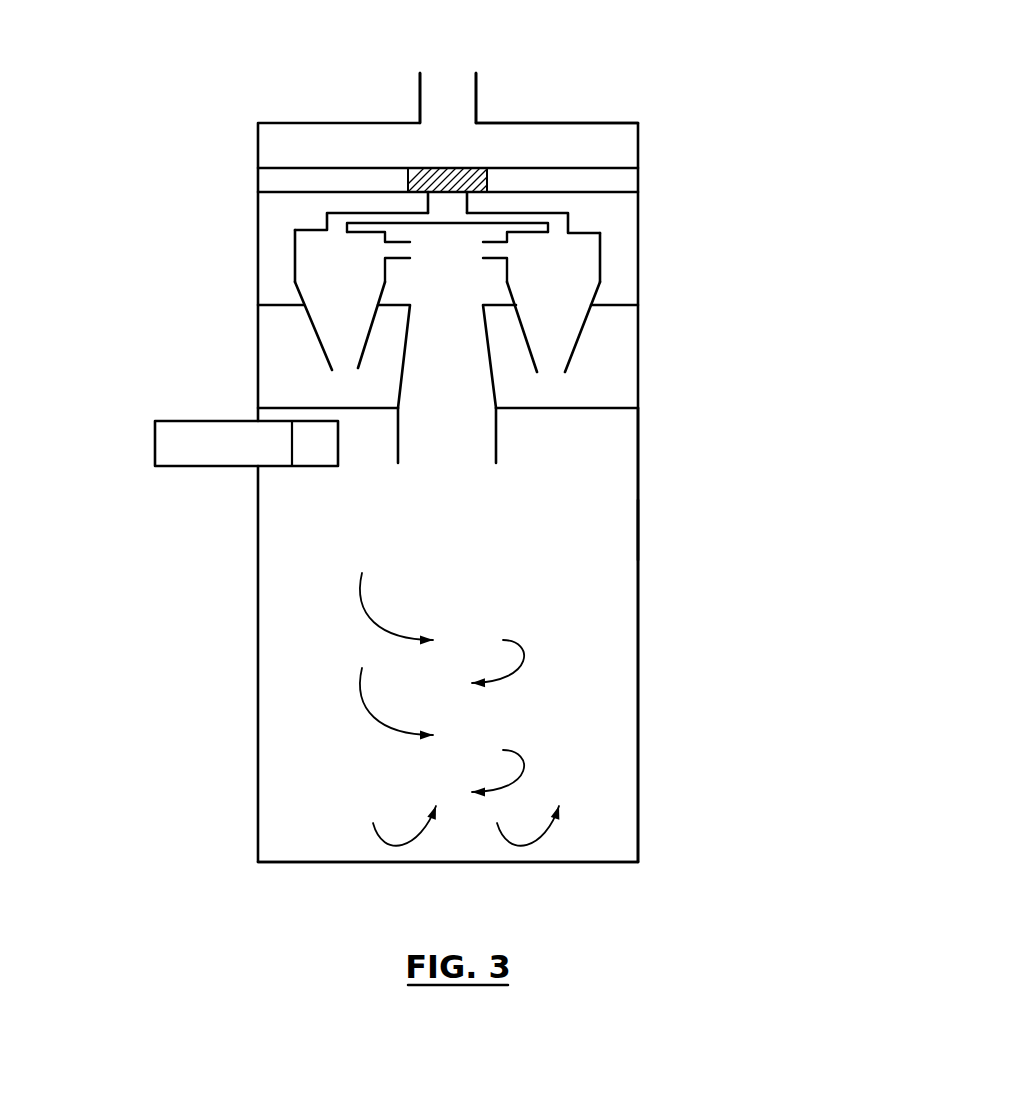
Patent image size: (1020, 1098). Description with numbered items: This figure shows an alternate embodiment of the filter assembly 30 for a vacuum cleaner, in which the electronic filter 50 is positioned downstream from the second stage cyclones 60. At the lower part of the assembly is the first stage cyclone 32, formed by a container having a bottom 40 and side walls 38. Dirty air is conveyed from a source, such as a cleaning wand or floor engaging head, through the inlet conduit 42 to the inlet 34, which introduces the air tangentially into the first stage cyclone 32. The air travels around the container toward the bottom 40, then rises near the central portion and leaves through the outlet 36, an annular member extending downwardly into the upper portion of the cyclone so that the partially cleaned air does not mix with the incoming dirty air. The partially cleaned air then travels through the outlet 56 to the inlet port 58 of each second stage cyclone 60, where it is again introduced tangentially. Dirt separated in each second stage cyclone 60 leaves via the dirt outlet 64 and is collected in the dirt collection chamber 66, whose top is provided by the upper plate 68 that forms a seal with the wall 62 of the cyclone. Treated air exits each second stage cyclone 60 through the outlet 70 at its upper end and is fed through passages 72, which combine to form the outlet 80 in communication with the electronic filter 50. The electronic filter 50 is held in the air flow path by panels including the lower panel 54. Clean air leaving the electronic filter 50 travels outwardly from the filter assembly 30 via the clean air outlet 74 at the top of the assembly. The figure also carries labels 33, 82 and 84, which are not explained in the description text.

The filter assembly 30 is at (700, 755).
The first stage cyclone 32 is at (613, 655).
The chamber wall 33 is at (638, 713).
The inlet 34 is at (300, 438).
The outlet 36 is at (473, 443).
The side walls 38 is at (638, 545).
The bottom 40 is at (593, 863).
The inlet conduit 42 is at (165, 441).
The electronic filter 50 is at (410, 188).
The lower panel 54 is at (615, 408).
The outlet 56 is at (435, 399).
The inlet port 58 is at (412, 249).
The second stage cyclone 60 is at (292, 277).
The wall of cyclone 62 is at (295, 258).
The dirt outlet 64 is at (348, 367).
The dirt collection chamber 66 is at (285, 390).
The upper plate 68 is at (277, 305).
The outlet 70 is at (312, 222).
The passage 72 is at (518, 221).
The clean air outlet 74 is at (450, 71).
The outlet 80 is at (457, 207).
The top wall 82 is at (638, 122).
The upper plate 84 is at (619, 168).